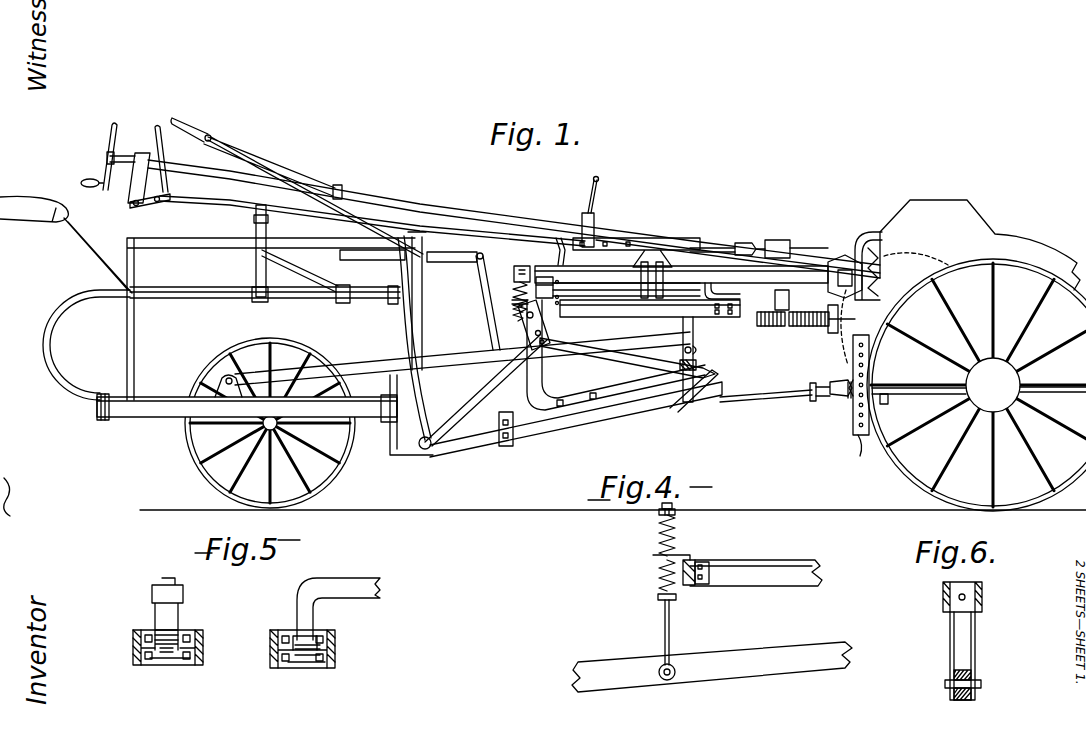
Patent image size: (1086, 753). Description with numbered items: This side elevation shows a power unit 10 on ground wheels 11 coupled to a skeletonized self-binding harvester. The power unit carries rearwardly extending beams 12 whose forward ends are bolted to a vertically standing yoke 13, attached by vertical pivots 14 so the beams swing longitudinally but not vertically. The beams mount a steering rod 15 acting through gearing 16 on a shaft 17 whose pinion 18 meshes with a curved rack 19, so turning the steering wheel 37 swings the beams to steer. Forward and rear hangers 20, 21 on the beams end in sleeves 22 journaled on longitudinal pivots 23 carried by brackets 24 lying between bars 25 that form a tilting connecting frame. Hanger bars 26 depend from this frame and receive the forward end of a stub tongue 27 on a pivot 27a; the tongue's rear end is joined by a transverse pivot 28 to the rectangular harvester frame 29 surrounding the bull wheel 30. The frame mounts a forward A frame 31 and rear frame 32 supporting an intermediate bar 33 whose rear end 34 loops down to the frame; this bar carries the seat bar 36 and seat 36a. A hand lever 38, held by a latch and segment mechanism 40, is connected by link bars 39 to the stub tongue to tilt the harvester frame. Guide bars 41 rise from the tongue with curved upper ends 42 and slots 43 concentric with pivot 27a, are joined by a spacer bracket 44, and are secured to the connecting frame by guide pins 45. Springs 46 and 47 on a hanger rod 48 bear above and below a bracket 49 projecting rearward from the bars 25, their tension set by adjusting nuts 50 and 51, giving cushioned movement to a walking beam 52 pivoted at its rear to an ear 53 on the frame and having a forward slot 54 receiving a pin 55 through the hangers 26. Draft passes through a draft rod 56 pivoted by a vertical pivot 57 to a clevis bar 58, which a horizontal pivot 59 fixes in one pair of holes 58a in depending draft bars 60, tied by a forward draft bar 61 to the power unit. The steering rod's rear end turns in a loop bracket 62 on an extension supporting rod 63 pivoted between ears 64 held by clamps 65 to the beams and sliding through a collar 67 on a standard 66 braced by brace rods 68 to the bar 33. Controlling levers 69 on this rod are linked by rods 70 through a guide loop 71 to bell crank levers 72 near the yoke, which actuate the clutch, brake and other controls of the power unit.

In FIG. 1, the power unit 10 is at (980, 245).
In FIG. 1, the ground wheels 11 is at (976, 385).
In FIG. 1, the rearwardly extending beams 12 is at (695, 282).
In FIG. 1, the yoke 13 is at (845, 276).
In FIG. 1, the vertical pivots 14 is at (885, 245).
In FIG. 1, the steering rod 15 is at (690, 240).
In FIG. 1, the gearing 16 is at (785, 240).
In FIG. 1, the shaft 17 is at (790, 300).
In FIG. 1, the pinion 18 is at (768, 326).
In FIG. 1, the rack 19 is at (808, 326).
In FIG. 1, the forward hanger 20 is at (715, 298).
In FIG. 5, the forward hanger 20 is at (313, 620).
In FIG. 1, the rear hanger 21 is at (570, 292).
In FIG. 5, the rear hanger 21 is at (178, 612).
In FIG. 5, the sleeves 22 is at (165, 645).
In FIG. 5, the longitudinally extending pivots 23 is at (182, 645).
In FIG. 6, the longitudinally extending pivots 23 is at (965, 594).
In FIG. 5, the brackets 24 is at (385, 652).
In FIG. 6, the brackets 24 is at (960, 582).
In FIG. 1, the longitudinally extending bars 25 is at (620, 318).
In FIG. 4, the longitudinally extending bars 25 is at (752, 563).
In FIG. 6, the longitudinally extending bars 25 is at (982, 600).
In FIG. 1, the hanger bars 26 is at (683, 326).
In FIG. 6, the hanger bars 26 is at (950, 632).
In FIG. 1, the stub tongue 27 is at (525, 430).
In FIG. 6, the stub tongue 27 is at (962, 700).
In FIG. 1, the pivot 27a is at (688, 400).
In FIG. 6, the pivot 27a is at (981, 684).
In FIG. 1, the transverse horizontal pivot 28 is at (428, 450).
In FIG. 1, the rectangular harvester frame 29 is at (165, 418).
In FIG. 1, the bull wheel 30 is at (270, 423).
In FIG. 1, the forward A frame 31 is at (400, 343).
In FIG. 1, the rear frame 32 is at (136, 332).
In FIG. 1, the intermediate supporting rod or bar 33 is at (222, 299).
In FIG. 1, the rear end of intermediate bar 34 is at (52, 352).
In FIG. 1, the seat bar 36 is at (98, 255).
In FIG. 1, the seat 36a is at (30, 220).
In FIG. 1, the steering wheel 37 is at (106, 160).
In FIG. 1, the hand lever 38 is at (283, 166).
In FIG. 1, the link bars 39 is at (478, 320).
In FIG. 1, the latch and segment mechanism 40 is at (395, 262).
In FIG. 1, the guide bars 41 is at (540, 380).
In FIG. 1, the curved upper ends 42 is at (550, 330).
In FIG. 1, the guide slots 43 is at (512, 350).
In FIG. 1, the spacer bracket 44 is at (548, 343).
In FIG. 1, the guide pins 45 is at (512, 302).
In FIG. 1, the spring 46 is at (512, 293).
In FIG. 4, the spring 46 is at (658, 533).
In FIG. 1, the spring 47 is at (518, 320).
In FIG. 4, the spring 47 is at (658, 580).
In FIG. 1, the hanger rod 48 is at (522, 266).
In FIG. 4, the hanger rod 48 is at (670, 630).
In FIG. 4, the bracket 49 is at (688, 558).
In FIG. 4, the adjusting nut 50 is at (675, 512).
In FIG. 4, the adjusting nut 51 is at (660, 603).
In FIG. 1, the walking beam 52 is at (452, 362).
In FIG. 4, the walking beam 52 is at (745, 653).
In FIG. 1, the ear 53 is at (224, 380).
In FIG. 1, the slot 54 is at (676, 360).
In FIG. 1, the pin 55 is at (695, 350).
In FIG. 1, the draft rod 56 is at (765, 400).
In FIG. 1, the vertical pivot 57 is at (838, 398).
In FIG. 1, the clevis bar 58 is at (869, 372).
In FIG. 1, the series of holes 58a is at (851, 400).
In FIG. 1, the horizontal pivot 59 is at (850, 400).
In FIG. 1, the depending draft bars 60 is at (870, 454).
In FIG. 1, the forward draft bar 61 is at (905, 395).
In FIG. 1, the loop bracket 62 is at (128, 190).
In FIG. 1, the extension supporting rod 63 is at (514, 216).
In FIG. 1, the ears 64 is at (745, 245).
In FIG. 1, the clamps 65 is at (626, 295).
In FIG. 1, the standard 66 is at (256, 227).
In FIG. 1, the loop or collar 67 is at (372, 217).
In FIG. 1, the brace rods 68 is at (300, 271).
In FIG. 1, the controlling levers 69 is at (163, 150).
In FIG. 1, the rods 70 is at (640, 238).
In FIG. 1, the guide loop 71 is at (604, 188).
In FIG. 1, the bell crank levers 72 is at (921, 246).